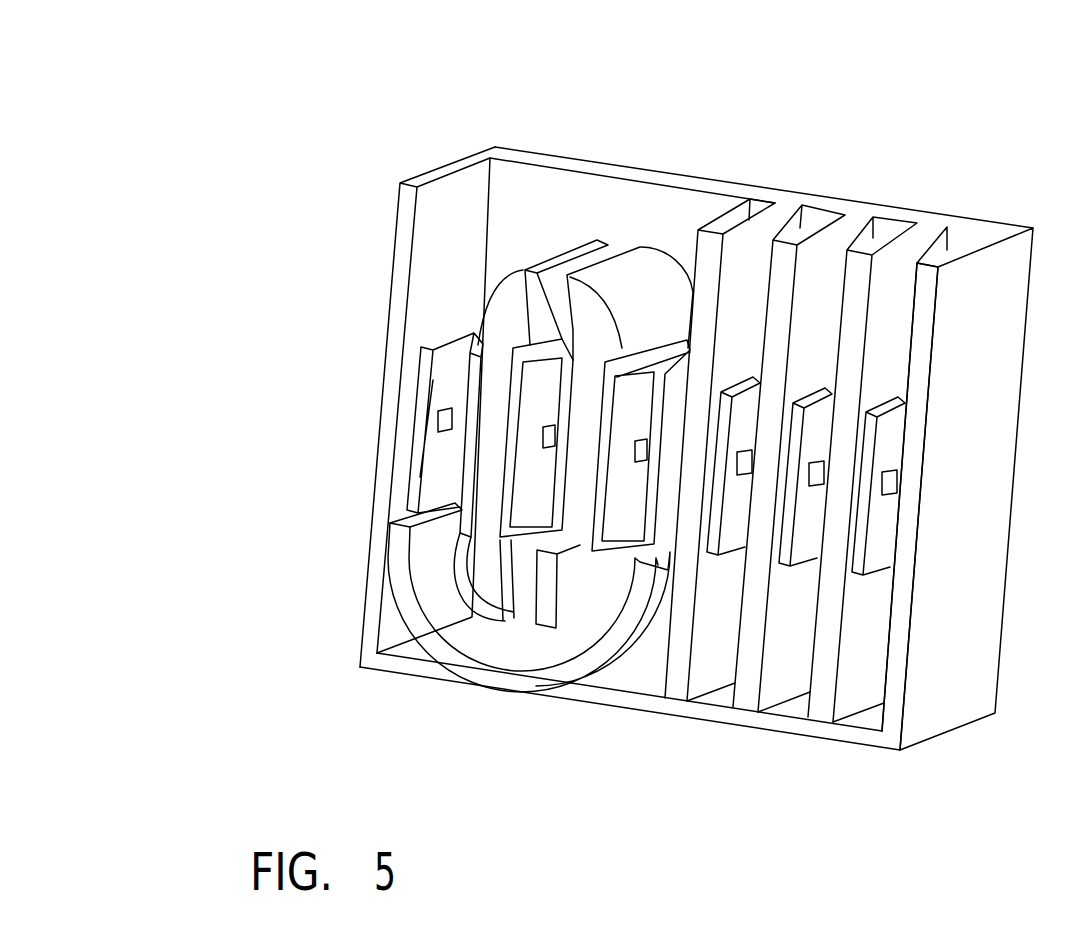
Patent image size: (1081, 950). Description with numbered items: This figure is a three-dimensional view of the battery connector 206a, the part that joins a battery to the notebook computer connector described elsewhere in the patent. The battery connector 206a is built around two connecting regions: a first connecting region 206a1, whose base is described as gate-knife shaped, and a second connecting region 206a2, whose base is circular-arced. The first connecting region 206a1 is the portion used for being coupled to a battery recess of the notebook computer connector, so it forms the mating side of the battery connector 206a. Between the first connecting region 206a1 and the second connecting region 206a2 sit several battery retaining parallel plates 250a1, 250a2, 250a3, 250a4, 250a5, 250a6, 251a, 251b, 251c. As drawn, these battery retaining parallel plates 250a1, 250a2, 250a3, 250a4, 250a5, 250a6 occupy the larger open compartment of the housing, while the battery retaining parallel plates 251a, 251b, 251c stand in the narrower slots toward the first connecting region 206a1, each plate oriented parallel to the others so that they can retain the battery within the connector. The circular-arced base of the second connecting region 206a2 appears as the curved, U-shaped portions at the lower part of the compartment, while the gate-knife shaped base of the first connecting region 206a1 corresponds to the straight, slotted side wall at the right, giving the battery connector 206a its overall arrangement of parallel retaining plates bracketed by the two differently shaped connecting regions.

The battery connector 206a is at (290, 145).
The first connecting region 206a1 is at (978, 242).
The second connecting region 206a2 is at (749, 213).
The battery retaining parallel plate 250a1 is at (418, 433).
The battery retaining parallel plate 250a2 is at (670, 397).
The battery retaining parallel plate 250a3 is at (470, 502).
The battery retaining parallel plate 250a4 is at (572, 575).
The battery retaining parallel plate 250a5 is at (520, 504).
The battery retaining parallel plate 250a6 is at (612, 517).
The battery retaining parallel plate 251a is at (715, 545).
The battery retaining parallel plate 251b is at (790, 552).
The battery retaining parallel plate 251c is at (862, 562).